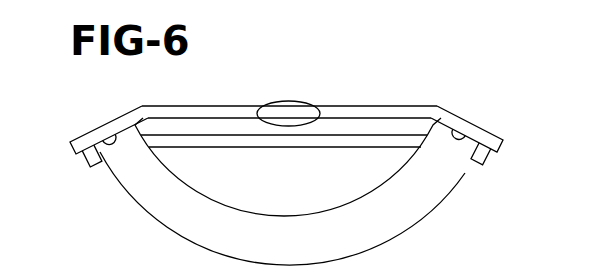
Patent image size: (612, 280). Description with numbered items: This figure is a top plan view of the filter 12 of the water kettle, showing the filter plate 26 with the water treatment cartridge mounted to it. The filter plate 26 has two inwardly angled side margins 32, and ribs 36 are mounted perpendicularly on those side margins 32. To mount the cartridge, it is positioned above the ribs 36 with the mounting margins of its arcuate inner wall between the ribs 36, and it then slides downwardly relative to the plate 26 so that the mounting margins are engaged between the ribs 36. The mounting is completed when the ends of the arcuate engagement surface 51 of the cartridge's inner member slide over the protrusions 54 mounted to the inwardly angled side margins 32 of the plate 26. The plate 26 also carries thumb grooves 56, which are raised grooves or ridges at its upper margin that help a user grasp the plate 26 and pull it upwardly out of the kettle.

The filter 12 is at (357, 88).
The filter plate 26 is at (382, 107).
The inwardly angled side margins 32 is at (100, 127).
The ribs 36 is at (83, 166).
The arcuate engagement surface 51 is at (263, 250).
The protrusions 54 is at (109, 141).
The thumb grooves 56 is at (297, 121).